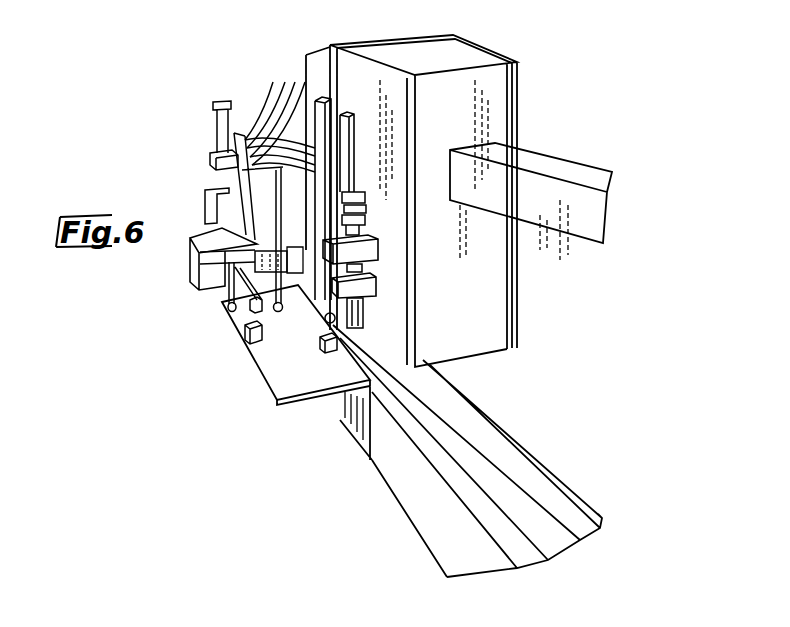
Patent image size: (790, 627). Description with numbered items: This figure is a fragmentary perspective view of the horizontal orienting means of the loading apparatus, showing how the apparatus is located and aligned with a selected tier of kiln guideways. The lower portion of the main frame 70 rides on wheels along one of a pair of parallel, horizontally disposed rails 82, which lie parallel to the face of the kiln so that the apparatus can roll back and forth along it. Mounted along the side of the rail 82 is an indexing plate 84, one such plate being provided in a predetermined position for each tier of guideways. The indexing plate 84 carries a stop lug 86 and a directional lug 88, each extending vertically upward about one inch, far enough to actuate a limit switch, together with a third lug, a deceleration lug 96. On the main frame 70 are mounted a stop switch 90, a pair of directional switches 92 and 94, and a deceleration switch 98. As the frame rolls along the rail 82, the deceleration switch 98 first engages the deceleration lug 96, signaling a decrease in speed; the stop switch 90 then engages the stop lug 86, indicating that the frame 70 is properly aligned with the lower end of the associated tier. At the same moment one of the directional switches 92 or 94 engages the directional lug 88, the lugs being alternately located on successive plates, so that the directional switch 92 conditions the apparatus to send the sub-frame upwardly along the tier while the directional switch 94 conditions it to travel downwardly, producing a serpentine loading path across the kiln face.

The main frame 70 is at (534, 112).
The rail 82 is at (400, 447).
The indexing plate 84 is at (265, 386).
The stop lug 86 is at (324, 351).
The directional lug 88 is at (247, 336).
The stop switch 90 is at (365, 307).
The directional switch 92 is at (227, 290).
The directional switch 94 is at (286, 250).
The deceleration lug 96 is at (266, 312).
The deceleration switch 98 is at (255, 252).